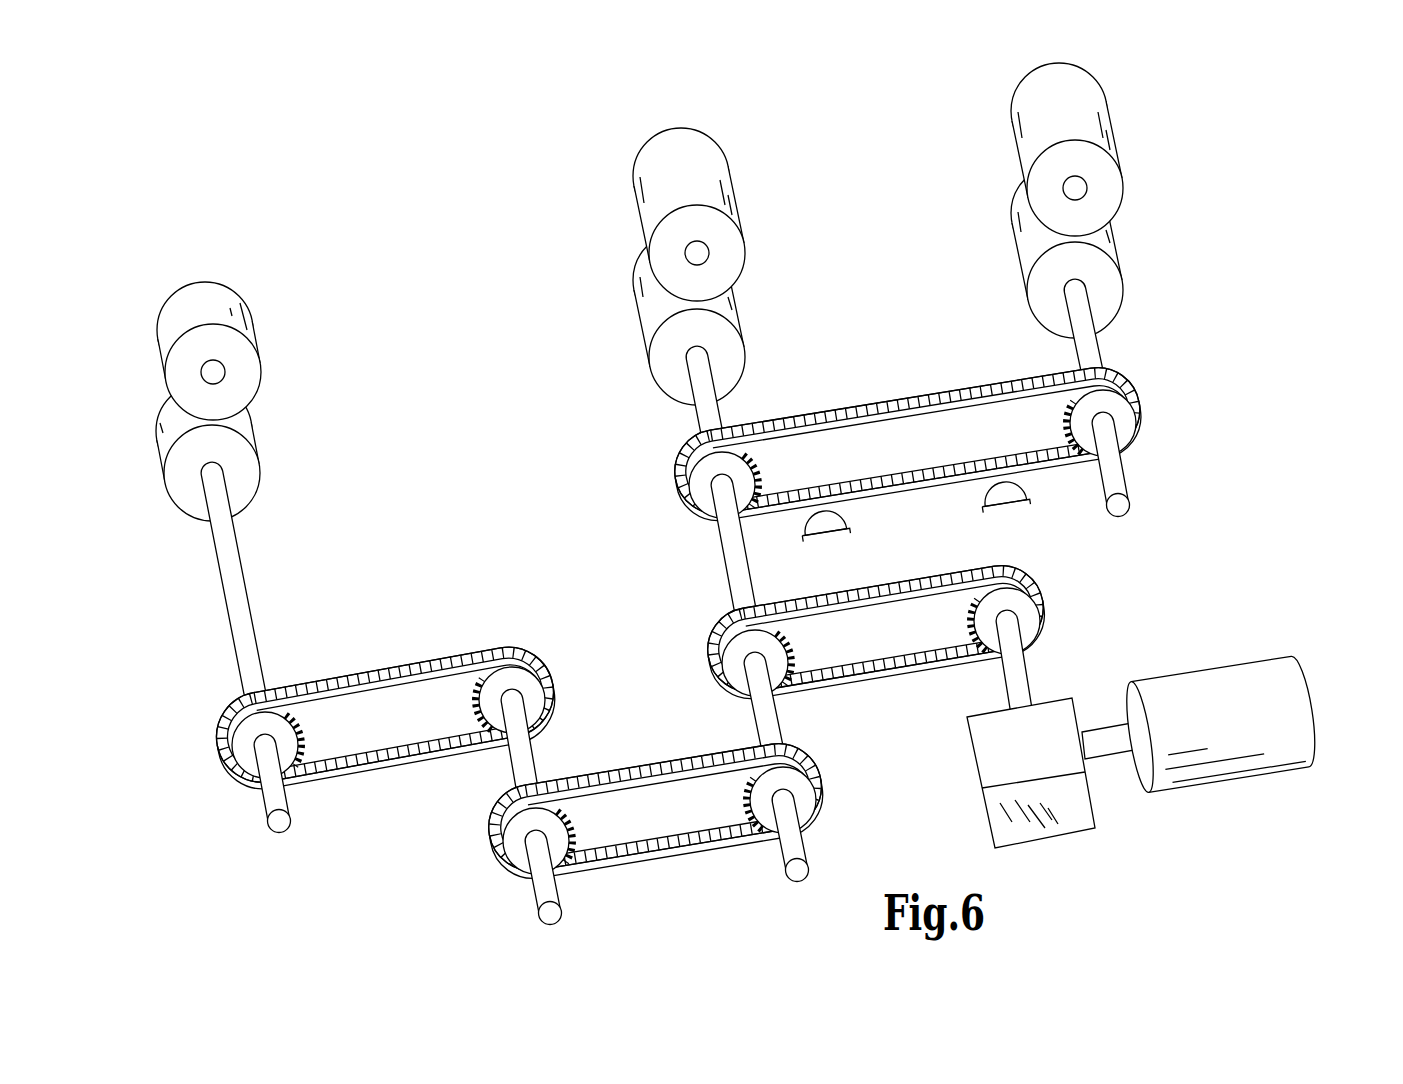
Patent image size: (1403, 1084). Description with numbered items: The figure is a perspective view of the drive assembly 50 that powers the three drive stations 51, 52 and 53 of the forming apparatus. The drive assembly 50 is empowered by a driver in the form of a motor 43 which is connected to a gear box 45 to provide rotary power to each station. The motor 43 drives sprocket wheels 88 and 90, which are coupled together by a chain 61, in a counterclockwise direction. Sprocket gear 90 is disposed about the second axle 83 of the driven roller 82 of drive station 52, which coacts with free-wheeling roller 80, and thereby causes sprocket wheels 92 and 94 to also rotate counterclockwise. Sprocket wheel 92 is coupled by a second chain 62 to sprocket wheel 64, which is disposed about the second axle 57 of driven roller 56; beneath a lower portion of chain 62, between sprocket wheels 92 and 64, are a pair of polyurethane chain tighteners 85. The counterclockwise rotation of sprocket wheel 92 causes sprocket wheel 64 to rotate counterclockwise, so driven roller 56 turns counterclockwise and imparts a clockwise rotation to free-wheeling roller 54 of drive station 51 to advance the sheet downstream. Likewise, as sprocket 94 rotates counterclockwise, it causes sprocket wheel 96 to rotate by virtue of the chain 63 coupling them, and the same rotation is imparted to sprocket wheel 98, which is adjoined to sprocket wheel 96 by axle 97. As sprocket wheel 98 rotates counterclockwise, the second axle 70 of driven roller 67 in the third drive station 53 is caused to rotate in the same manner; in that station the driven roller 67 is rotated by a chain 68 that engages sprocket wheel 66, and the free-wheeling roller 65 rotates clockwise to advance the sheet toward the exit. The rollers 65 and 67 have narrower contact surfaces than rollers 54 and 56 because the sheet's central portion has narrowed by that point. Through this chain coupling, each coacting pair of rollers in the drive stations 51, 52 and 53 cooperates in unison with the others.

The motor 43 is at (1280, 760).
The gear box 45 is at (1063, 830).
The drive assembly 50 is at (771, 494).
The drive station 51 is at (1117, 200).
The drive station 52 is at (742, 266).
The third drive station 53 is at (264, 401).
The free-wheeling roller 54 is at (1090, 118).
The driven roller 56 is at (1113, 296).
The second axle 57 is at (1127, 475).
The chain 61 is at (952, 572).
The second chain 62 is at (898, 398).
The chain 63 is at (655, 870).
The sprocket wheel 64 is at (1130, 428).
The free-wheeling roller 65 is at (243, 365).
The sprocket wheel 66 is at (248, 733).
The driven roller 67 is at (245, 472).
The chain 68 is at (400, 662).
The second axle 70 is at (250, 572).
The free-wheeling roller 80 is at (735, 240).
The driven roller 82 is at (737, 353).
The second axle 83 is at (713, 407).
The polyurethane chain tightener 85 is at (830, 525).
The sprocket wheel 88 is at (1030, 625).
The sprocket wheel 90 is at (718, 648).
The sprocket wheel 92 is at (700, 483).
The sprocket wheel 94 is at (800, 797).
The sprocket wheel 96 is at (520, 837).
The axle 97 is at (530, 868).
The sprocket wheel 98 is at (533, 700).